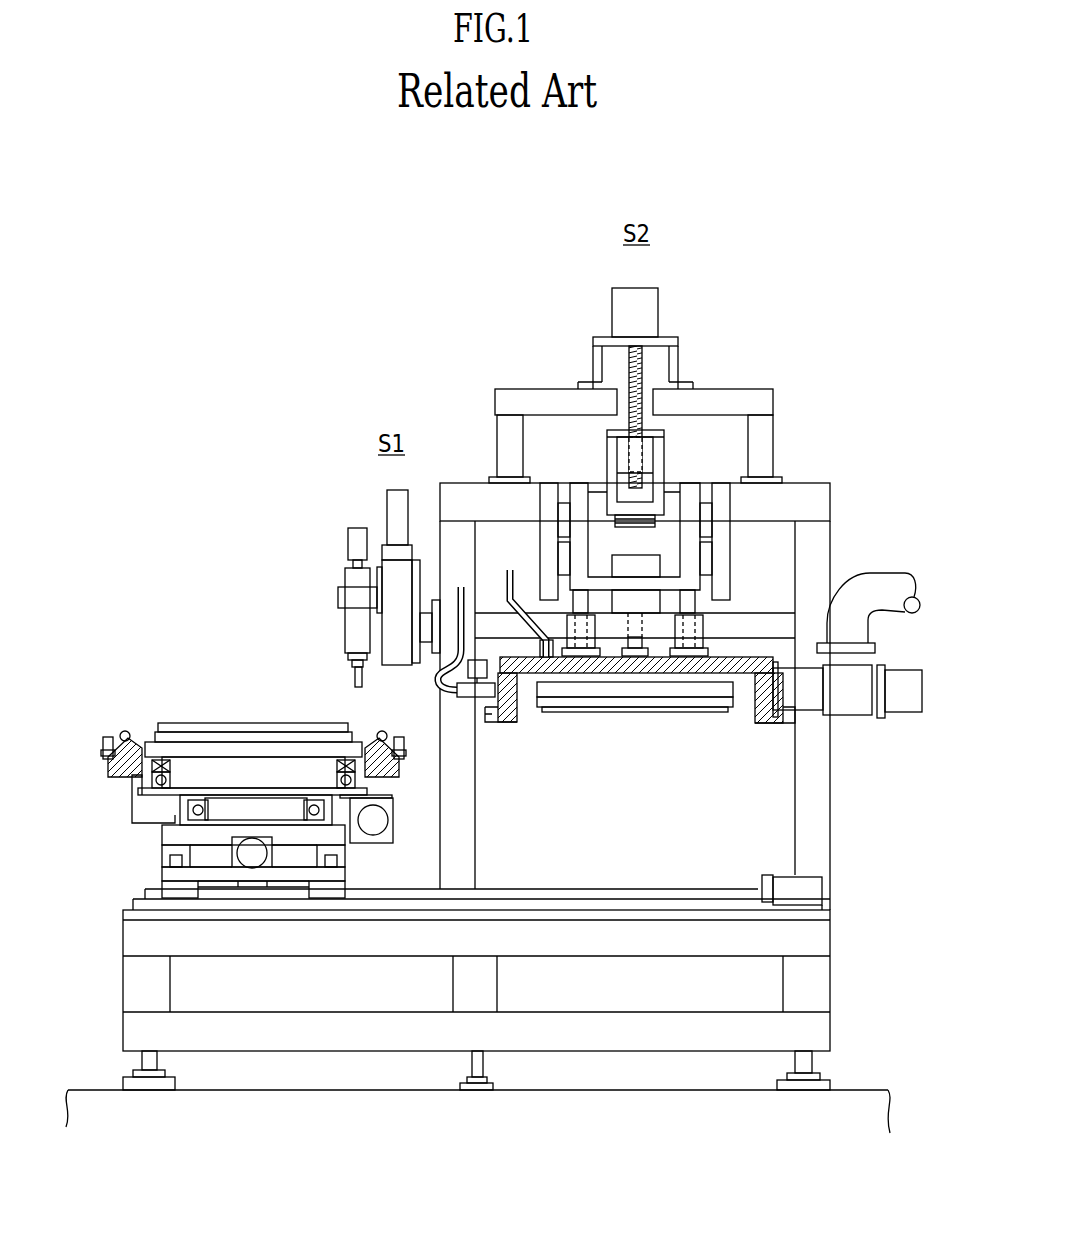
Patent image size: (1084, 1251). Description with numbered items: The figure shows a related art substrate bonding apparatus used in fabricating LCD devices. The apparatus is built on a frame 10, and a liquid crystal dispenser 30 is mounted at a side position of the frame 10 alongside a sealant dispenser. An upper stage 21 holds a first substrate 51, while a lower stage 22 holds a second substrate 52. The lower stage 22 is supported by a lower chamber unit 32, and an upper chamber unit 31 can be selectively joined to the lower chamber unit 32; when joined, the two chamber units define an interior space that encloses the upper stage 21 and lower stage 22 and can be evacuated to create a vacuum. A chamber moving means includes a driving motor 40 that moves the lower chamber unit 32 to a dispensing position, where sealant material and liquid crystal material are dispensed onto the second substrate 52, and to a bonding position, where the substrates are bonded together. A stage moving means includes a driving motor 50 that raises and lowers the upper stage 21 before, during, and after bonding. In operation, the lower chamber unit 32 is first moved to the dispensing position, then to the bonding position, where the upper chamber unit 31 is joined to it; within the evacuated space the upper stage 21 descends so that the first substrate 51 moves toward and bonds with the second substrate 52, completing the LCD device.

The frame 10 is at (818, 810).
The upper stage 21 is at (637, 699).
The lower stage 22 is at (193, 755).
The liquid crystal dispenser 30 is at (337, 620).
The upper chamber unit 31 is at (532, 706).
The lower chamber unit 32 is at (130, 770).
The driving motor 40 is at (812, 890).
The driving motor 50 is at (685, 316).
The first substrate 51 is at (704, 713).
The second substrate 52 is at (243, 724).